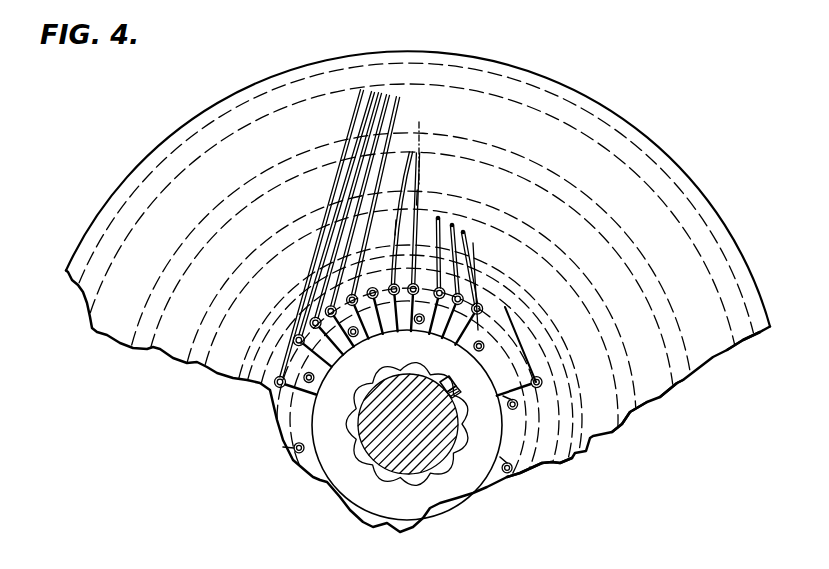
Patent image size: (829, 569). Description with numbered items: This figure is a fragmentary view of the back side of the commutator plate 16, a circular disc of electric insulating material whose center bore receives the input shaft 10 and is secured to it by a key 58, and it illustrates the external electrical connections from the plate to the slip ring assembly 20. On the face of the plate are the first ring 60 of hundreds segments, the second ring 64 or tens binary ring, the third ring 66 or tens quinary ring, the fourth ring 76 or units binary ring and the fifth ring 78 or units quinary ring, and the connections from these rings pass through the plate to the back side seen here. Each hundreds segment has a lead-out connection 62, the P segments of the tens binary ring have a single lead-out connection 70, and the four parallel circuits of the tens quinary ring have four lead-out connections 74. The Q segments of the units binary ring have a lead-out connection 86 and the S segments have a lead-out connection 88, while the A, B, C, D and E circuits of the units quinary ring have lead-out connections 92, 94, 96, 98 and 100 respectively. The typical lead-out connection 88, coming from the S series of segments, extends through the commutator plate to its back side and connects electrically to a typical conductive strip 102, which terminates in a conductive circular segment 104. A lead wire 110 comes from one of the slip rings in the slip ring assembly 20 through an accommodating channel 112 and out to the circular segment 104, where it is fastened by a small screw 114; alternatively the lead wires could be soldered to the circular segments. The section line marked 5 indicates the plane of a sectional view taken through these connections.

The input shaft 10 is at (411, 418).
The commutator plate 16 is at (641, 79).
The slip ring assembly 20 is at (312, 480).
The key 58 is at (454, 398).
The first ring 60 is at (524, 470).
The lead-out connection 62 is at (421, 325).
The second ring 64 is at (565, 466).
The third ring 66 is at (630, 417).
The lead-out connection 70 is at (506, 307).
The lead-out connections 74 is at (475, 242).
The fourth ring 76 is at (682, 386).
The fifth ring 78 is at (743, 348).
The lead-out connection 86 is at (410, 152).
The lead-out connection 88 is at (421, 168).
The lead-out connection 92 is at (363, 91).
The lead-out connection 94 is at (373, 92).
The lead-out connection 96 is at (381, 93).
The lead-out connection 98 is at (389, 96).
The lead-out connection 100 is at (399, 97).
The conductive strip 102 is at (403, 198).
The conductive circular segment 104 is at (397, 223).
The lead wire 110 is at (403, 378).
The channel 112 is at (378, 370).
The screw 114 is at (393, 284).
The section line 5- 5 is at (421, 183).